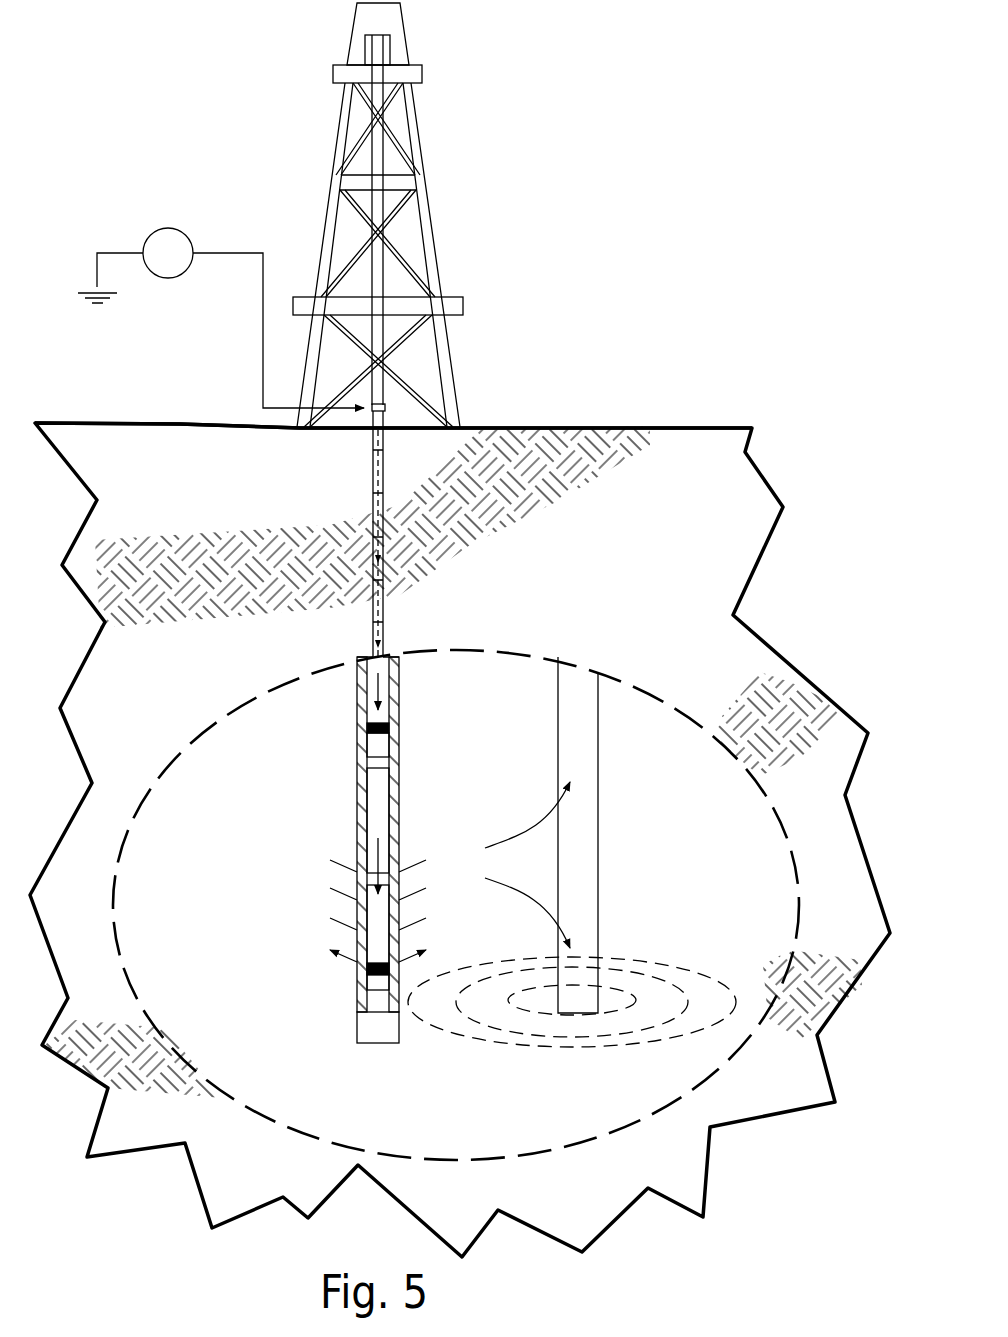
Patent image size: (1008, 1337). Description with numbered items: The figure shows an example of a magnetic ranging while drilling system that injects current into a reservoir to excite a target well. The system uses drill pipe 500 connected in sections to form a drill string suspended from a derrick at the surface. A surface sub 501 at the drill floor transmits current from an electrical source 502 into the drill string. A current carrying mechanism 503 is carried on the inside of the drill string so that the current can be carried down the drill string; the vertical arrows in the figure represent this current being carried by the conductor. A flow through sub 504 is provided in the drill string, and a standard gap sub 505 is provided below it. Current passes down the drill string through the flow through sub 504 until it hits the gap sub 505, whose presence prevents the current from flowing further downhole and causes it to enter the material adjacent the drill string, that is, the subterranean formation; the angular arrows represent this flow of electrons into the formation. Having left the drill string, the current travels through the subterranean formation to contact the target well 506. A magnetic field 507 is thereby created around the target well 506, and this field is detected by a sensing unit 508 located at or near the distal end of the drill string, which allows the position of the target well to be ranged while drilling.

The drill pipe 500 is at (392, 500).
The surface sub 501 is at (248, 426).
The electrical source 502 is at (231, 319).
The current carrying mechanism 503 is at (385, 668).
The flow through sub 504 is at (367, 728).
The gap sub 505 is at (363, 972).
The target well 506 is at (596, 723).
The magnetic field 507 is at (733, 1020).
The sensing unit 508 is at (383, 1045).